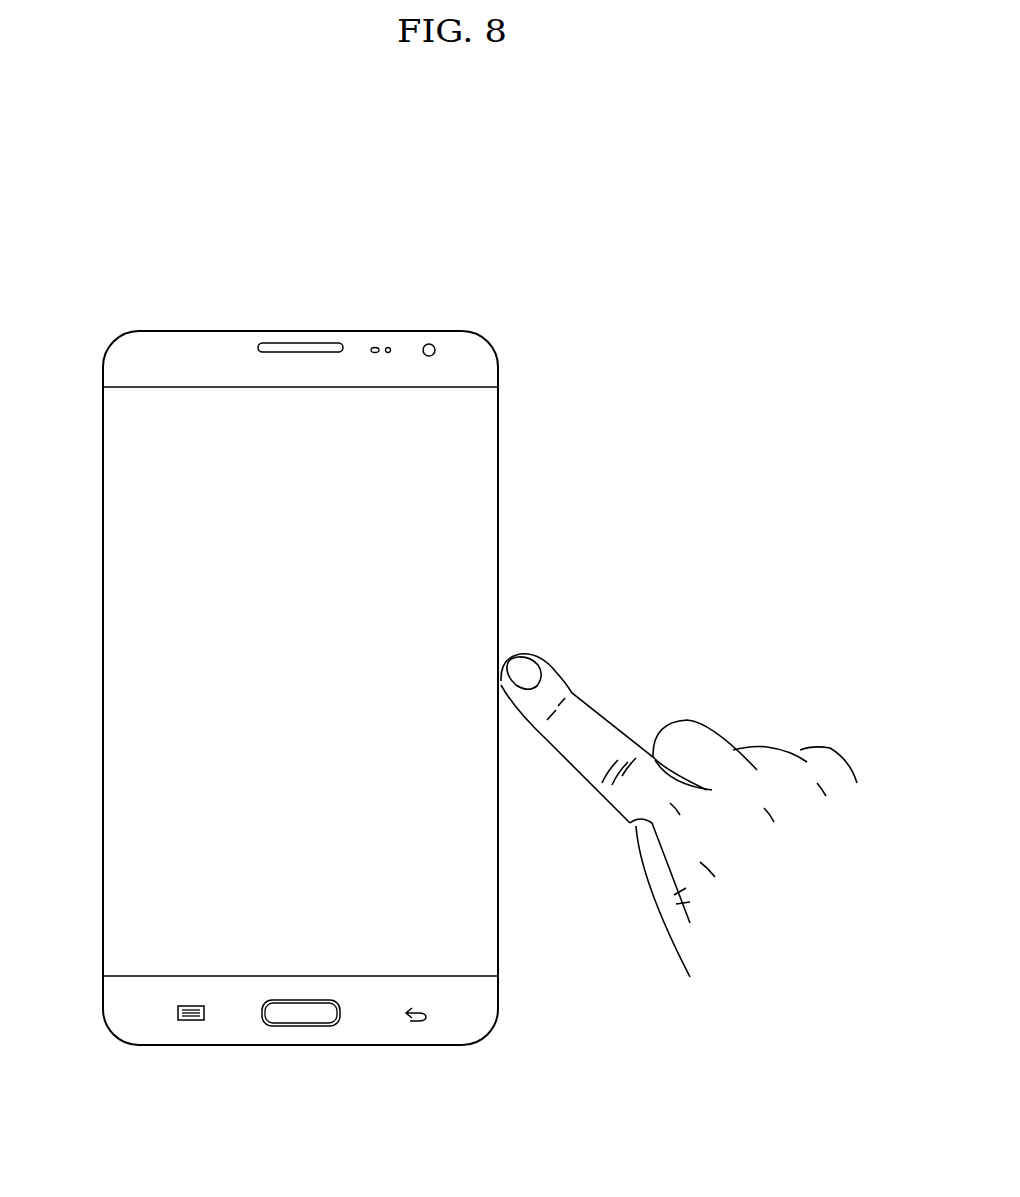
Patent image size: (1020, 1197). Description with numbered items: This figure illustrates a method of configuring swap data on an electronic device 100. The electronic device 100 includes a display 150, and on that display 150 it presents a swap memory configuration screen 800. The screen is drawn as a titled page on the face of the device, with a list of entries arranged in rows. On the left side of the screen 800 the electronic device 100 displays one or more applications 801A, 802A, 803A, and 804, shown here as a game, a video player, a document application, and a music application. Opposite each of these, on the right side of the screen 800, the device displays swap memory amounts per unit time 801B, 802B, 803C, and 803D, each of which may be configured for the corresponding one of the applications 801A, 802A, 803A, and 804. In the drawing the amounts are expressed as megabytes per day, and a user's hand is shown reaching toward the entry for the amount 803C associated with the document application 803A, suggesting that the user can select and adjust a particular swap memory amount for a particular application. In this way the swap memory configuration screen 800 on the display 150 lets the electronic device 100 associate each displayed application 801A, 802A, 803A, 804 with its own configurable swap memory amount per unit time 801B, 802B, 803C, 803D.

The electronic device 100 is at (317, 332).
The display 150 is at (120, 443).
The swap memory configuration screen 800 is at (490, 432).
The application 801A is at (117, 540).
The swap memory amount per unit time 801B is at (497, 540).
The application 802A is at (117, 605).
The swap memory amount per unit time 802B is at (497, 605).
The application 803A is at (117, 664).
The swap memory amount per unit time 803C is at (497, 664).
The swap memory amount per unit time 803D is at (493, 745).
The application 804 is at (117, 730).